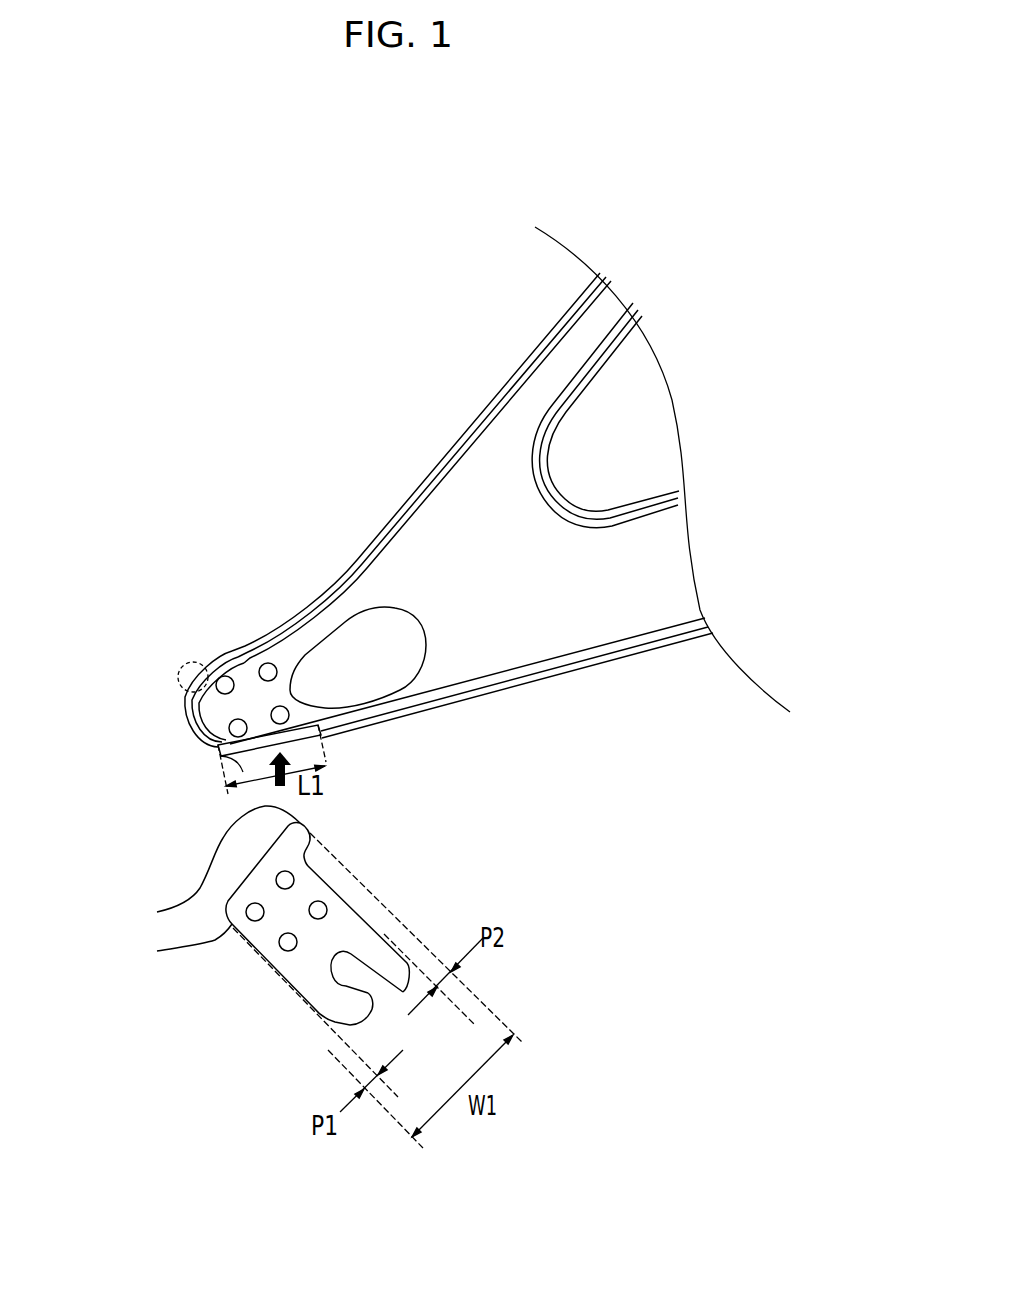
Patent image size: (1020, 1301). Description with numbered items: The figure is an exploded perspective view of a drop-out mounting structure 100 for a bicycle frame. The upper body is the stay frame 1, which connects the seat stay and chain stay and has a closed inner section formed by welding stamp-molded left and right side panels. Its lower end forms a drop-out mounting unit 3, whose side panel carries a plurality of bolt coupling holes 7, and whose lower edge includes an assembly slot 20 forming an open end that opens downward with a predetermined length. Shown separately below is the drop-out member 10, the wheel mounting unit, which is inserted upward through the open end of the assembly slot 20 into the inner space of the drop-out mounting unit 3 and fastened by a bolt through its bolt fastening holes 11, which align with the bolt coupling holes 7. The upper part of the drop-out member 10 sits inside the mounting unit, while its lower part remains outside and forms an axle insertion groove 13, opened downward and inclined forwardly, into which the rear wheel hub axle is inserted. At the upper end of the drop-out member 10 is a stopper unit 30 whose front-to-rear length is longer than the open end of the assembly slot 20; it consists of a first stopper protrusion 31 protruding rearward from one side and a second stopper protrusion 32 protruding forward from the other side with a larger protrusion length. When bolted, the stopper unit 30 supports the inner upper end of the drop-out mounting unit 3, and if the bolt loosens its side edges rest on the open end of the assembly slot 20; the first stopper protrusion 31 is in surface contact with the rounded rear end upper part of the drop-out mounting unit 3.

The drop-out mounting structure 100 is at (389, 233).
The stay frame 1 is at (471, 373).
The drop-out mounting unit 3 is at (168, 715).
The bolt coupling holes 7 is at (269, 663).
The assembly slot 20 is at (219, 774).
The drop-out member 10 is at (329, 934).
The bolt fastening holes 11 is at (256, 921).
The axle insertion groove 13 is at (372, 999).
The stopper unit 30 is at (191, 887).
The first stopper protrusion 31 is at (125, 905).
The second stopper protrusion 32 is at (215, 868).